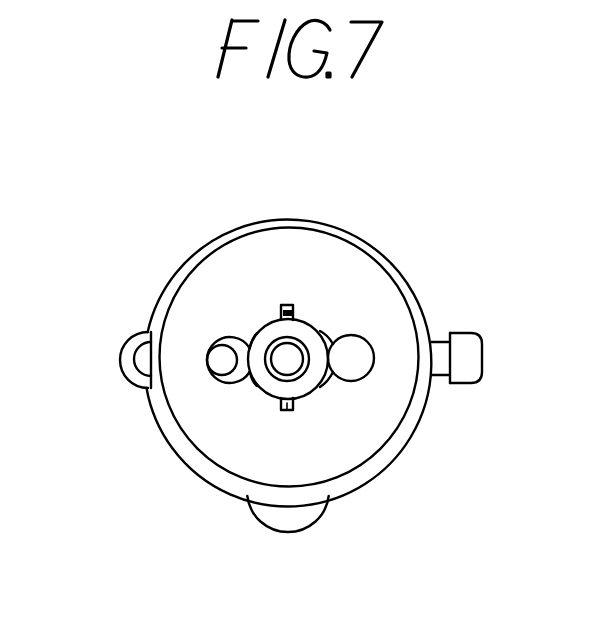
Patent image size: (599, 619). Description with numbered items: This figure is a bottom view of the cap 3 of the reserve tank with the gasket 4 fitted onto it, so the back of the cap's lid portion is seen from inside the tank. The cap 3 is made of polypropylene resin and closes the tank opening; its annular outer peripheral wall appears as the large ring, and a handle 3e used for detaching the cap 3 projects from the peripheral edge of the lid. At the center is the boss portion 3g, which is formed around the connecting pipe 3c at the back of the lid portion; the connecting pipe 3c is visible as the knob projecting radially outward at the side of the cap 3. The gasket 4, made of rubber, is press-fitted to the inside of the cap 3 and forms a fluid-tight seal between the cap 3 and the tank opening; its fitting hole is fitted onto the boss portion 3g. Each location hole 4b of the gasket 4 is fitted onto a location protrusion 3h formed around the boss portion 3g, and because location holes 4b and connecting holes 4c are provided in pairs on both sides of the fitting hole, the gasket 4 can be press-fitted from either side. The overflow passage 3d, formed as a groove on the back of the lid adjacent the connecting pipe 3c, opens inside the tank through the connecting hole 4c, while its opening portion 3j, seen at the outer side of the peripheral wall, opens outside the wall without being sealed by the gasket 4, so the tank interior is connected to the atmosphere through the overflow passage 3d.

The cap 3 is at (331, 220).
The gasket 4 is at (377, 281).
The location protrusion 3h is at (283, 306).
The overflow passage 3d is at (220, 358).
The opening portion 3j is at (137, 360).
The boss portion 3g is at (255, 388).
The connecting hole 4c is at (362, 366).
The location hole 4b is at (287, 408).
The connecting pipe 3c is at (443, 378).
The handle 3e is at (290, 517).